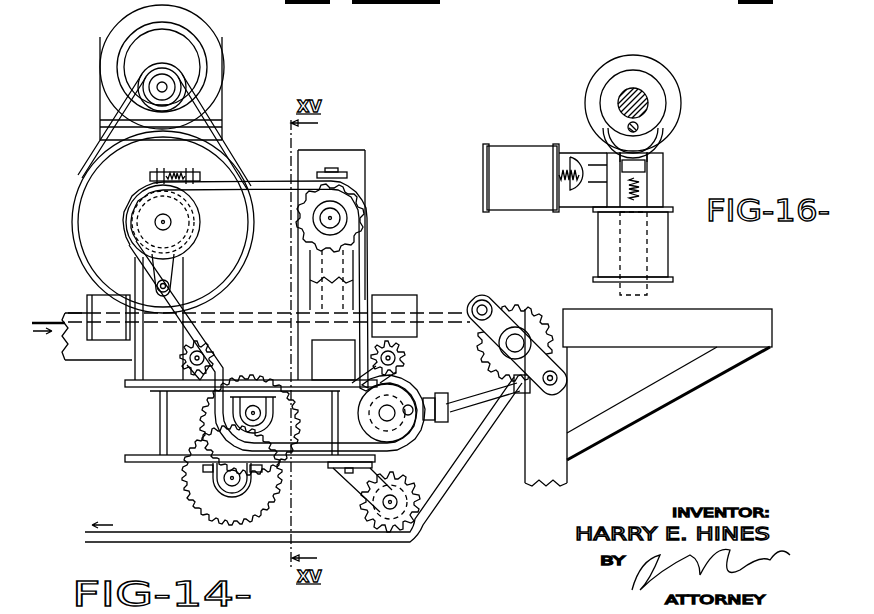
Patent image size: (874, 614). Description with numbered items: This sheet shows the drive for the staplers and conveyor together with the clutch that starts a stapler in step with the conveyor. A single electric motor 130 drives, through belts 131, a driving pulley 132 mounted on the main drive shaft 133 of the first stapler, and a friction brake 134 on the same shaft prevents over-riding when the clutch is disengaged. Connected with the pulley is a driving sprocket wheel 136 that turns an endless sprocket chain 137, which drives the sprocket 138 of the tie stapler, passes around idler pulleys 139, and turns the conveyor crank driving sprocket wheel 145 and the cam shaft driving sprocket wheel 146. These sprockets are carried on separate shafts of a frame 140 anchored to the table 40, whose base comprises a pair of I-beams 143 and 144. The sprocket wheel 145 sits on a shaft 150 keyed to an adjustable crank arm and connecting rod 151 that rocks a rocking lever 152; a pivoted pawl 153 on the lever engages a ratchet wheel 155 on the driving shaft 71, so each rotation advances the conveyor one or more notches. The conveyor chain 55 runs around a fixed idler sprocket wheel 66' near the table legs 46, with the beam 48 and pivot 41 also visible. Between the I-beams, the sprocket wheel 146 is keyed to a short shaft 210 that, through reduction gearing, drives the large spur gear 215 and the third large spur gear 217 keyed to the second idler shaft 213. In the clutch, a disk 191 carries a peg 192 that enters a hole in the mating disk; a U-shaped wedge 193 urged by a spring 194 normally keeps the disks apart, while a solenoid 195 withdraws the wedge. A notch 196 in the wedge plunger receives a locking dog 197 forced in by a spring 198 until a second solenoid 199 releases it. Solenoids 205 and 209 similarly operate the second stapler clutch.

In FIG. 14, the electric motor 130 is at (229, 51).
In FIG. 14, the belts 131 is at (190, 100).
In FIG. 14, the driving pulley 132 is at (220, 157).
In FIG. 14, the main drive shaft 133 is at (172, 222).
In FIG. 16, the main drive shaft 133 is at (648, 92).
In FIG. 14, the friction brake 134 is at (130, 207).
In FIG. 14, the driving sprocket wheel 136 is at (200, 214).
In FIG. 14, the endless sprocket chain 137 is at (232, 184).
In FIG. 14, the sprocket 138 is at (352, 214).
In FIG. 14, the idler pulleys 139 is at (222, 357).
In FIG. 14, the frame 140 is at (150, 275).
In FIG. 14, the I-beam 143 is at (130, 392).
In FIG. 14, the I-beam 144 is at (307, 470).
In FIG. 14, the conveyor crank driving sprocket wheel 145 is at (383, 447).
In FIG. 14, the cam shaft driving sprocket wheel 146 is at (178, 420).
In FIG. 14, the shaft 150 is at (428, 421).
In FIG. 14, the adjustable crank arm and connecting rod 151 is at (472, 394).
In FIG. 14, the rocking lever 152 is at (556, 366).
In FIG. 14, the pawl 153 is at (500, 298).
In FIG. 14, the ratchet wheel 155 is at (557, 283).
In FIG. 14, the second solenoid 199 is at (95, 298).
In FIG. 16, the second solenoid 199 is at (533, 140).
In FIG. 14, the solenoid 205 is at (333, 360).
In FIG. 14, the solenoid 209 is at (383, 301).
In FIG. 14, the short shaft 210 is at (246, 412).
In FIG. 14, the second idler shaft 213 is at (224, 478).
In FIG. 14, the large spur gear 215 is at (250, 421).
In FIG. 14, the third large spur gear 217 is at (205, 498).
In FIG. 14, the table 40 is at (553, 312).
In FIG. 14, the pivot 41 is at (443, 333).
In FIG. 14, the table legs 46 is at (560, 476).
In FIG. 14, the beam 48 is at (740, 338).
In FIG. 14, the endless chain 55 is at (36, 320).
In FIG. 14, the fixed idler sprocket wheel 66' is at (411, 502).
In FIG. 14, the driving shaft 71 is at (528, 340).
In FIG. 16, the clutch disk 191 is at (662, 97).
In FIG. 16, the peg 192 is at (640, 125).
In FIG. 16, the U-shaped wedge 193 is at (658, 143).
In FIG. 16, the spring 194 is at (643, 187).
In FIG. 16, the solenoid 195 is at (668, 238).
In FIG. 16, the notch 196 is at (640, 168).
In FIG. 16, the locking dog 197 is at (582, 158).
In FIG. 16, the spring 198 is at (560, 190).